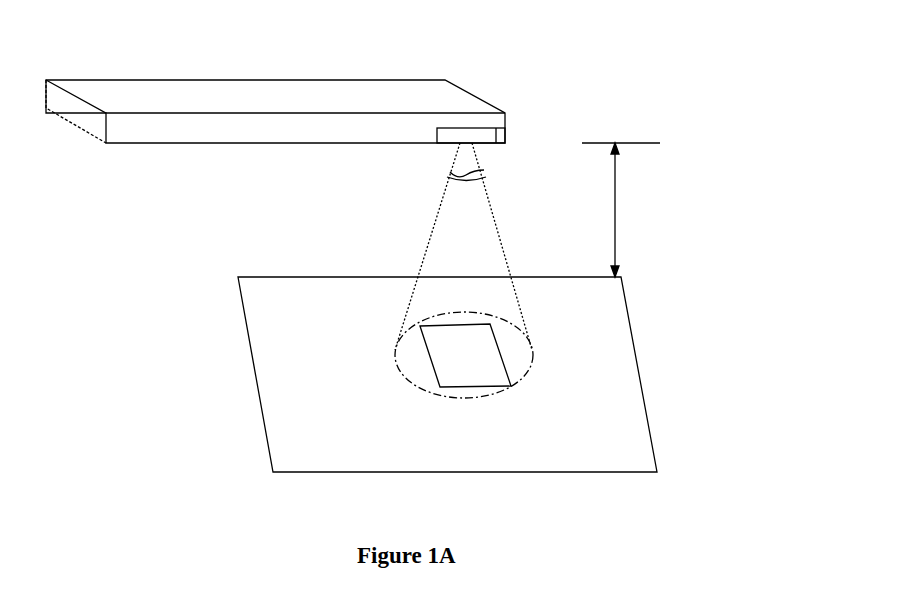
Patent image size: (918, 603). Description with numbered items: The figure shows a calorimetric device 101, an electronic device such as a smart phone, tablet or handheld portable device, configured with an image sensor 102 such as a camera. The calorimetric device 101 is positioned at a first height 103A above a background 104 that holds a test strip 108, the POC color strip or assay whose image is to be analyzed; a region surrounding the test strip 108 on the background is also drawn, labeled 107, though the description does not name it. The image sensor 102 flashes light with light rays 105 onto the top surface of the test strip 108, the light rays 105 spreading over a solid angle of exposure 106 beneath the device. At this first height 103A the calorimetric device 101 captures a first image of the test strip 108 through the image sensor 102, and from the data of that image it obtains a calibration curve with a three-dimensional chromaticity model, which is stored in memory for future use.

The calorimetric device 101 is at (373, 80).
The image sensor 102 is at (505, 128).
The first height 103A is at (615, 195).
The background 104 is at (633, 352).
The light rays 105 is at (425, 238).
The solid angle of exposure 106 is at (456, 181).
The projection surface 107 is at (417, 386).
The test strip 108 is at (483, 366).